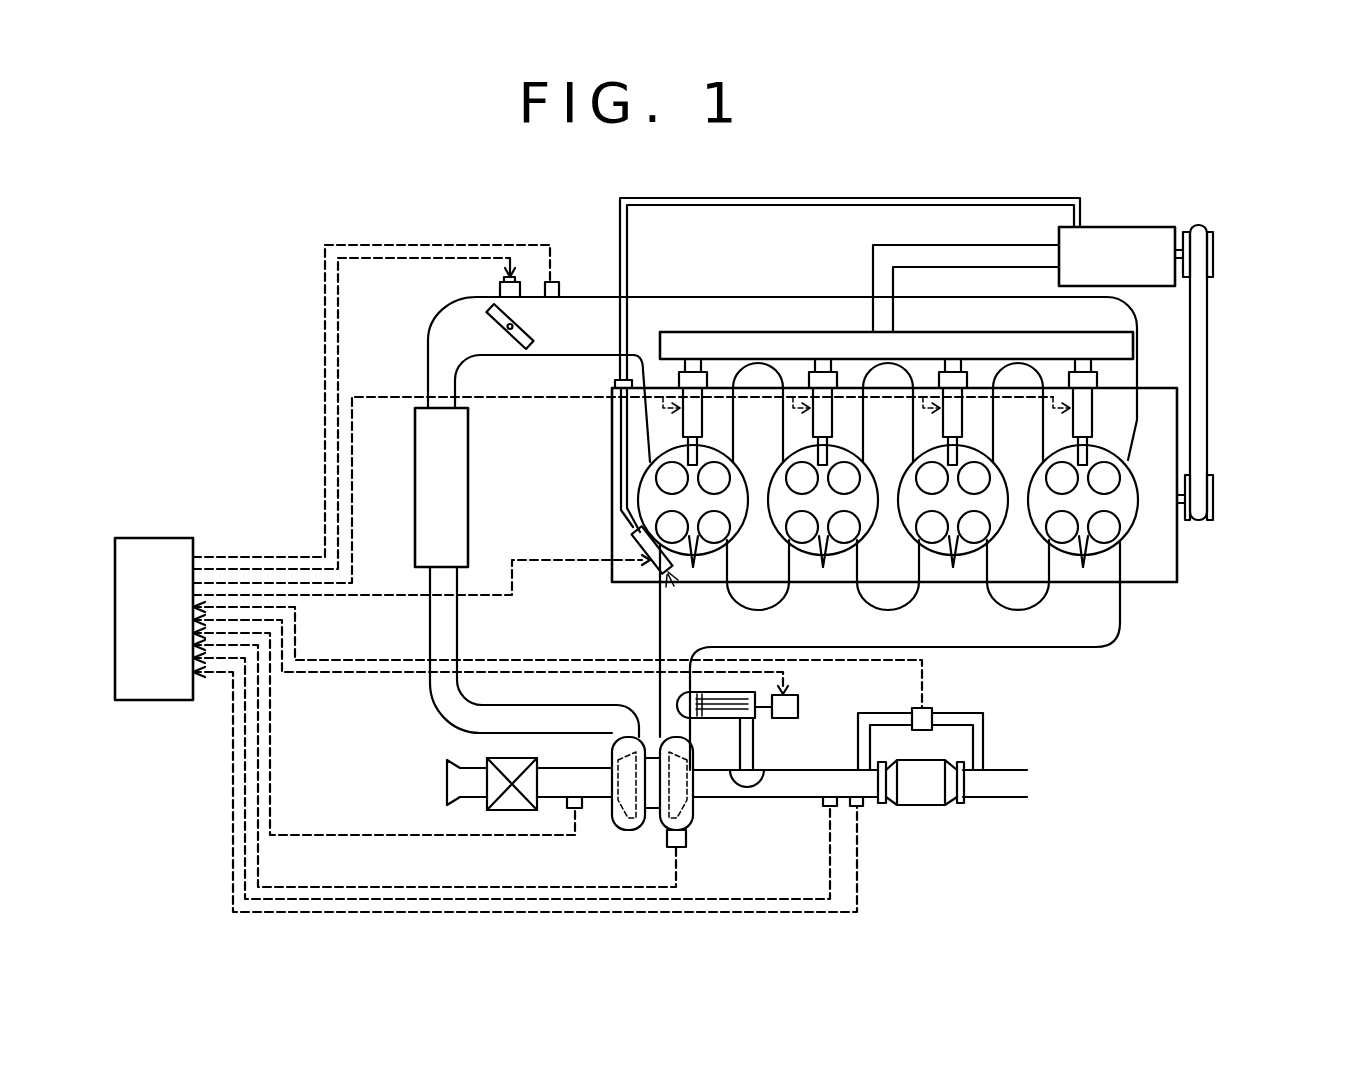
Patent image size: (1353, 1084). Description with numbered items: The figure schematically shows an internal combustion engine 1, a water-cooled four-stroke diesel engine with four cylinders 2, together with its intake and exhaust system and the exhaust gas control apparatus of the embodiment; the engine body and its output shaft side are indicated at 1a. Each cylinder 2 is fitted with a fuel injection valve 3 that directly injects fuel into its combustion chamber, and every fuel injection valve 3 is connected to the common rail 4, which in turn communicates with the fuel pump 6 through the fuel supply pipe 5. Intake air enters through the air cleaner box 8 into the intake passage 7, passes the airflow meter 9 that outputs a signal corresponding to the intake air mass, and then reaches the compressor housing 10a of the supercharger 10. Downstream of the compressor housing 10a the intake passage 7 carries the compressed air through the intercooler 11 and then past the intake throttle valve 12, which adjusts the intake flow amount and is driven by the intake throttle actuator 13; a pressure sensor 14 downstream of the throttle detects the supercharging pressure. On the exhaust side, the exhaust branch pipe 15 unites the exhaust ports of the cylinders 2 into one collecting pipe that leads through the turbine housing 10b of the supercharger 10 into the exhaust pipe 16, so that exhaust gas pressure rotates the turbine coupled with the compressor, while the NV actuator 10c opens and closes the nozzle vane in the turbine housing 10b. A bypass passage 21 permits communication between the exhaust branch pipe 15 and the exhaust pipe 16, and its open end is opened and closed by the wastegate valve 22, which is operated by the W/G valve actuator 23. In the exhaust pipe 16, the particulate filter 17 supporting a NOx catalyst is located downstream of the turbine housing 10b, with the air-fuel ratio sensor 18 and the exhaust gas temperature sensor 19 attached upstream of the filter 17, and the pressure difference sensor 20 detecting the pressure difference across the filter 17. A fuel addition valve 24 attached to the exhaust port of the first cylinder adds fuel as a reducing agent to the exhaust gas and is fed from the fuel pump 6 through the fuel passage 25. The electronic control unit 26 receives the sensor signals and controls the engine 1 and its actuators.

The internal combustion engine 1 is at (1227, 602).
The crankshaft / output shaft 1a is at (1178, 526).
The cylinder 2 is at (733, 522).
The fuel injection valve 3 is at (696, 412).
The accumulator (common rail) 4 is at (757, 332).
The fuel supply pipe 5 is at (1000, 250).
The fuel pump 6 is at (1155, 236).
The intake passage 7 is at (568, 356).
The air cleaner box 8 is at (500, 765).
The airflow meter 9 is at (575, 797).
The supercharger 10 is at (670, 818).
The compressor housing 10a is at (622, 815).
The turbine housing 10b is at (695, 825).
The NV actuator 10c is at (688, 845).
The intercooler 11 is at (416, 489).
The intake throttle valve 12 is at (514, 343).
The intake throttle actuator 13 is at (500, 290).
The pressure sensor 14 is at (557, 283).
The exhaust branch pipe 15 is at (1036, 648).
The exhaust pipe 16 is at (722, 790).
The particulate filter 17 is at (922, 797).
The air-fuel ratio sensor 18 is at (825, 806).
The exhaust gas temperature sensor 19 is at (858, 806).
The pressure difference sensor 20 is at (933, 708).
The bypass passage 21 is at (748, 722).
The wastegate valve 22 is at (720, 712).
The W/G valve actuator 23 is at (797, 708).
The fuel addition valve 24 is at (655, 570).
The fuel passage 25 is at (829, 206).
The electronic control unit (ECU) 26 is at (152, 548).